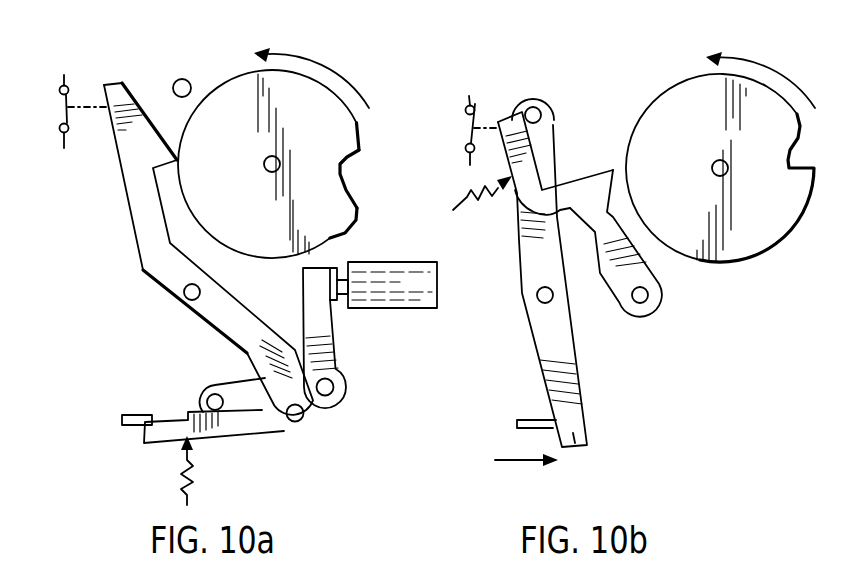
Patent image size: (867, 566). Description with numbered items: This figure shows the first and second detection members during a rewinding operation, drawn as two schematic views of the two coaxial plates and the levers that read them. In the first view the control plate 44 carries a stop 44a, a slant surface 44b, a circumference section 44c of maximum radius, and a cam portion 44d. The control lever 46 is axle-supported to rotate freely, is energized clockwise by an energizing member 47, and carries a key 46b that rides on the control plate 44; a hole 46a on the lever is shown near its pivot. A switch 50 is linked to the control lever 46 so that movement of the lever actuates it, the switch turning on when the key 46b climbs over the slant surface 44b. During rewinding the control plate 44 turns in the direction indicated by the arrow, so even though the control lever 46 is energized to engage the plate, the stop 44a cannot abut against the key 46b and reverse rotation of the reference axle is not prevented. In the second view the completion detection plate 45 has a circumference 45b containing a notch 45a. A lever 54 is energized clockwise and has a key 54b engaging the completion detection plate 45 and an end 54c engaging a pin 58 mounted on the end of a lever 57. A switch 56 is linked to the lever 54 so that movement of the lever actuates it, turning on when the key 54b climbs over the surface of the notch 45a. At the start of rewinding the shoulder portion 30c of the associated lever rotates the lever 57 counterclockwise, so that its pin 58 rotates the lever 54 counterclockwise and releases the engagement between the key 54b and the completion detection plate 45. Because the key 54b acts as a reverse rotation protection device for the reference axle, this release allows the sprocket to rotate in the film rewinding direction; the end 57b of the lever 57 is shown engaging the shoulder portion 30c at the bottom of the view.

In FIG. 10A, the switch 50 is at (66, 118).
In FIG. 10A, the control plate 44 is at (247, 90).
In FIG. 10A, the stop 44a is at (347, 167).
In FIG. 10A, the slant surface 44b is at (360, 141).
In FIG. 10A, the circumference section 44c is at (207, 90).
In FIG. 10A, the cam portion 44d is at (337, 210).
In FIG. 10A, the control lever 46 is at (162, 265).
In FIG. 10A, the lever pivot hole 46a is at (188, 296).
In FIG. 10A, the key 46b is at (147, 155).
In FIG. 10A, the energizing member 47 is at (258, 302).
In FIG. 10B, the switch 56 is at (468, 133).
In FIG. 10B, the lever 54 is at (592, 227).
In FIG. 10B, the key 54b is at (607, 172).
In FIG. 10B, the end 54c is at (512, 123).
In FIG. 10B, the pin 58 is at (533, 108).
In FIG. 10B, the completion detection plate 45 is at (720, 258).
In FIG. 10B, the notch 45a is at (810, 164).
In FIG. 10B, the circumference 45b is at (752, 262).
In FIG. 10B, the lever 57 is at (562, 361).
In FIG. 10B, the end 57b is at (587, 443).
In FIG. 10B, the shoulder portion 30c is at (527, 428).